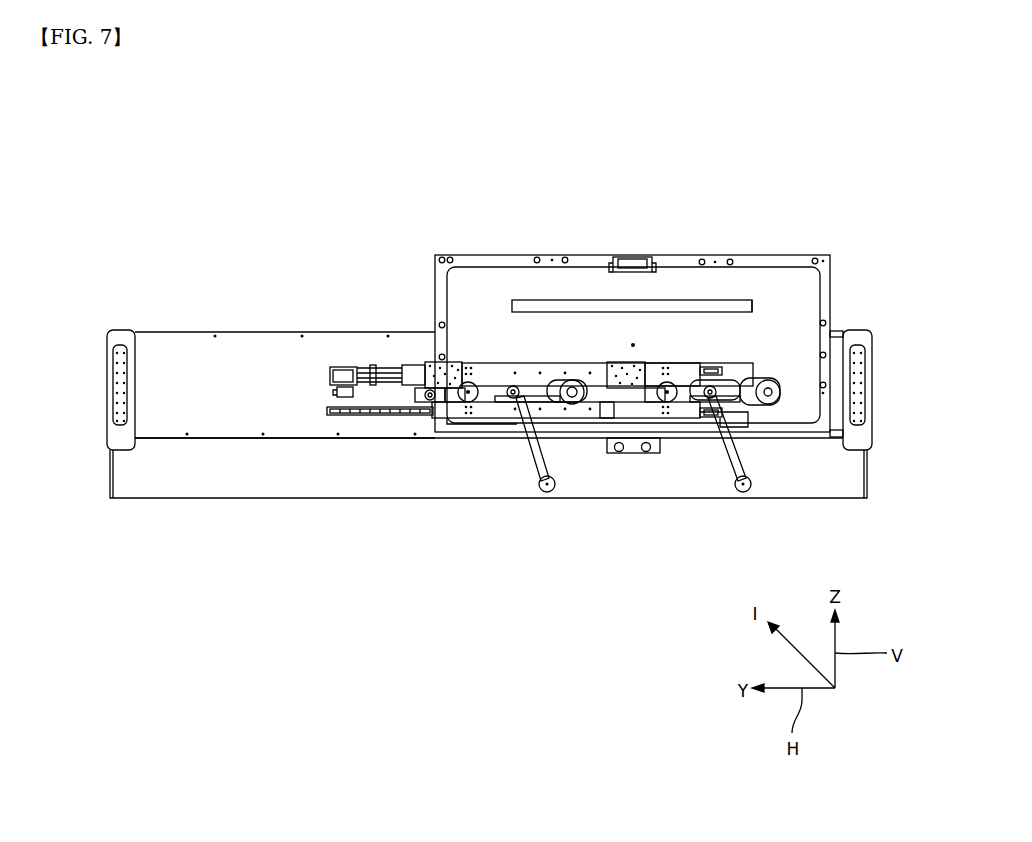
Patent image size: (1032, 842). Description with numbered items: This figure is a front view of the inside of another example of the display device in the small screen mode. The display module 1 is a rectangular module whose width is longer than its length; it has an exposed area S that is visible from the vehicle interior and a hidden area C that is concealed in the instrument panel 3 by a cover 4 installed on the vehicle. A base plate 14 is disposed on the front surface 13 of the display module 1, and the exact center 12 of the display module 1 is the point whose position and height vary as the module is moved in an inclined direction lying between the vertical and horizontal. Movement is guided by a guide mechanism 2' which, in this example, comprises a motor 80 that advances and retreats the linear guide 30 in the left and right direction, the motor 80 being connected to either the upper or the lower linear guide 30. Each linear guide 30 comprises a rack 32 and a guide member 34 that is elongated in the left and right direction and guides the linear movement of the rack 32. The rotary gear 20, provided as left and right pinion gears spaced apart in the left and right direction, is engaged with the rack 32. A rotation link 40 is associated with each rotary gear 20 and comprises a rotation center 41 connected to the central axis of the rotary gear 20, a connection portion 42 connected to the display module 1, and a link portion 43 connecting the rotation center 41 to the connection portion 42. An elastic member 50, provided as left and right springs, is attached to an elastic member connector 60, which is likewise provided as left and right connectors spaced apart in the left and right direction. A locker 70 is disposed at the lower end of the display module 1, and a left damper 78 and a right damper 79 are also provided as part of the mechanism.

The display module 1 is at (833, 220).
The instrument panel 3 is at (872, 330).
The cover 4 is at (158, 480).
The exact center 12 is at (633, 345).
The front surface 13 is at (782, 283).
The base plate 14 is at (595, 388).
The rotary gear 20 is at (468, 403).
The linear guide 30 is at (332, 278).
The rack 32 is at (462, 362).
The guide member 34 is at (395, 367).
The rotation link 40 is at (468, 178).
The rotation center 41 is at (502, 362).
The connection portion 42 is at (570, 387).
The link portion 43 is at (528, 385).
The elastic member 50 is at (533, 457).
The elastic member connector 60 is at (548, 492).
The locker 70 is at (633, 455).
The left damper 78 is at (613, 405).
The right damper 79 is at (412, 396).
The motor 80 is at (343, 373).
The exposed area S is at (833, 270).
The hidden area C is at (830, 367).
The guide mechanism 2' is at (845, 349).